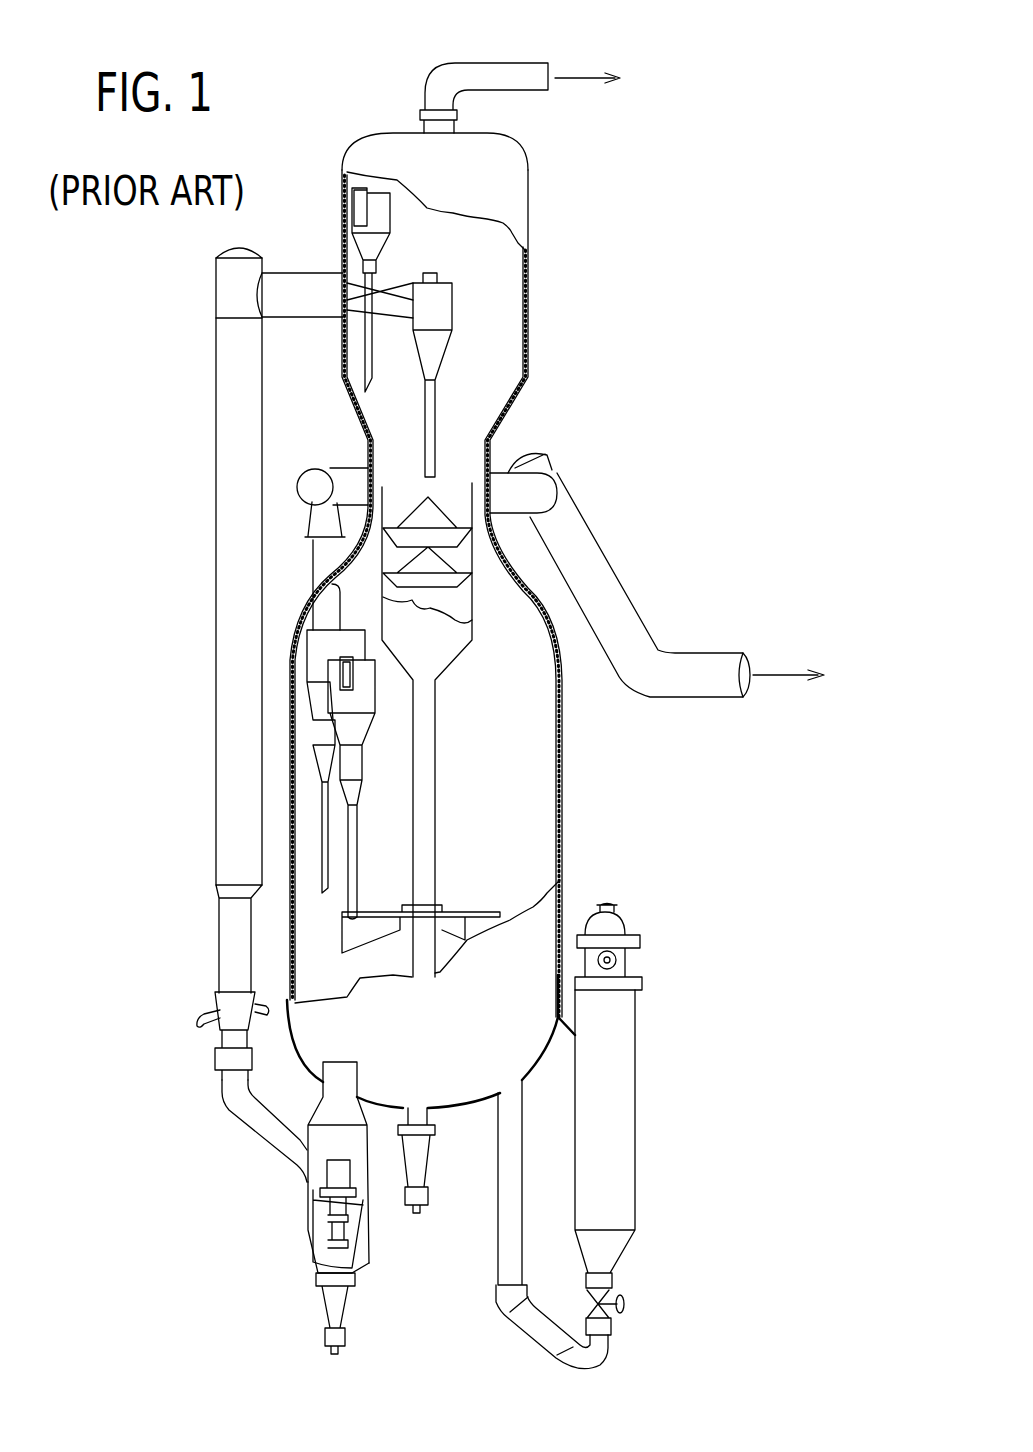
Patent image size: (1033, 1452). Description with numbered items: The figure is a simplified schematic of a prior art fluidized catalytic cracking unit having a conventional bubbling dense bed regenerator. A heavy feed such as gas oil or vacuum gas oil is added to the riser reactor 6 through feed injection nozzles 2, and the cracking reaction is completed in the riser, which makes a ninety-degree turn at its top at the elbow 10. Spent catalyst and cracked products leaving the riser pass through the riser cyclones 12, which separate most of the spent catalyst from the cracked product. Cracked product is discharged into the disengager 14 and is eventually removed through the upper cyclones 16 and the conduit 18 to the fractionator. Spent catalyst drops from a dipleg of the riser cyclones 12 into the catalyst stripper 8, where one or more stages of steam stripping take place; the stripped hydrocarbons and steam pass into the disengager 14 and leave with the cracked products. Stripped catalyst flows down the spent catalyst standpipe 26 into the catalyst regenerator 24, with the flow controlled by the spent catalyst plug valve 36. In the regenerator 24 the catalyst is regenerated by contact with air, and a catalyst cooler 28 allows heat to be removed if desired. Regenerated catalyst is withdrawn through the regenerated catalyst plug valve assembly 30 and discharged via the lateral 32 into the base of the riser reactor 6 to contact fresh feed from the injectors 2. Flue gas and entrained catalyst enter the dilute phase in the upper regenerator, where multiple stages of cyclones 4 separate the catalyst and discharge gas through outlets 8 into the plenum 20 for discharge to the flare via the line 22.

The feed injection nozzles 2 is at (200, 1008).
The cyclones 4 is at (313, 705).
The riser reactor 6 is at (222, 633).
The catalyst stripper 8 is at (380, 557).
The elbow 10 is at (218, 290).
The riser cyclones 12 is at (452, 318).
The disengager 14 is at (480, 262).
The upper cyclones 16 is at (352, 232).
The conduit 18 is at (520, 60).
The plenum 20 is at (537, 485).
The line 22 is at (695, 585).
The catalyst regenerator 24 is at (560, 768).
The spent catalyst standpipe 26 is at (440, 852).
The catalyst cooler 28 is at (640, 1072).
The regenerated catalyst plug valve assembly 30 is at (330, 1215).
The lateral 32 is at (245, 1122).
The spent catalyst plug valve 36 is at (430, 1130).